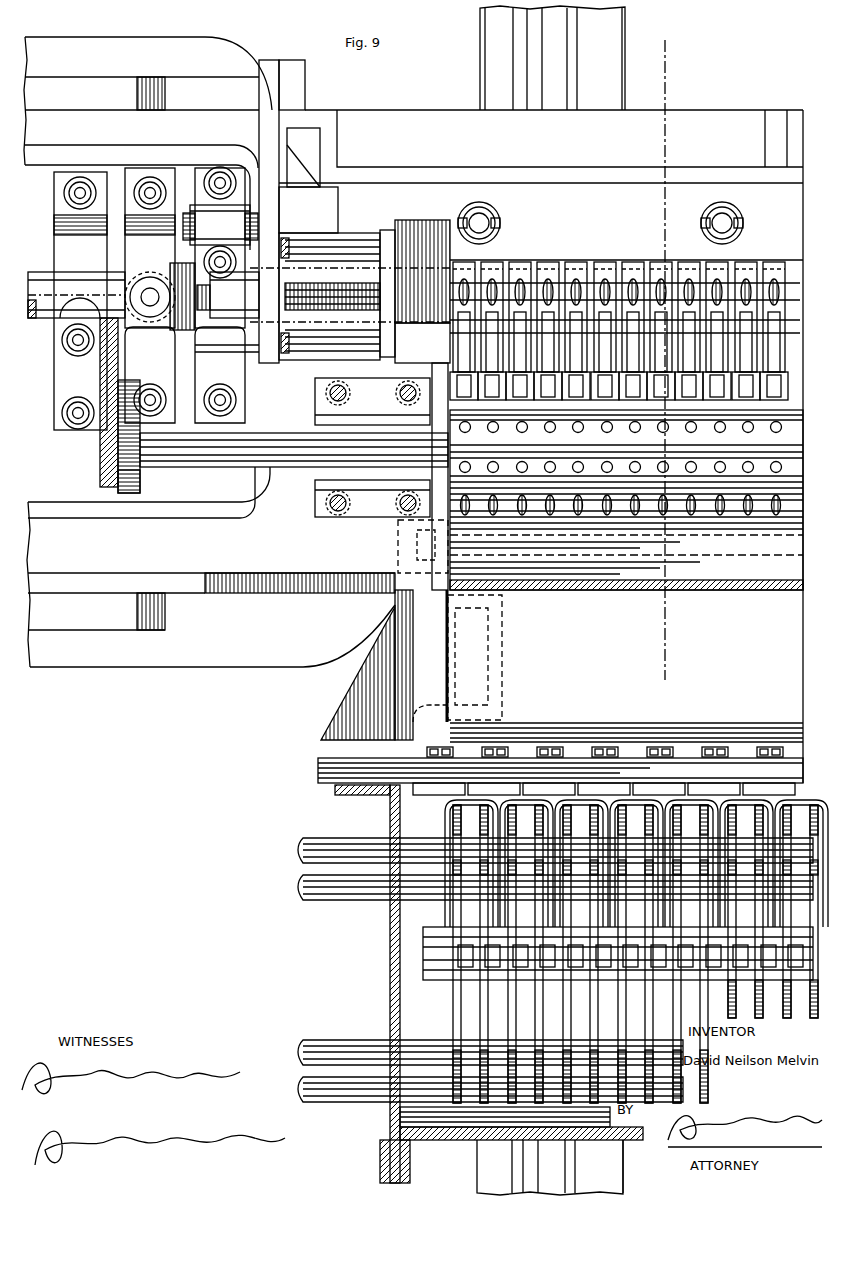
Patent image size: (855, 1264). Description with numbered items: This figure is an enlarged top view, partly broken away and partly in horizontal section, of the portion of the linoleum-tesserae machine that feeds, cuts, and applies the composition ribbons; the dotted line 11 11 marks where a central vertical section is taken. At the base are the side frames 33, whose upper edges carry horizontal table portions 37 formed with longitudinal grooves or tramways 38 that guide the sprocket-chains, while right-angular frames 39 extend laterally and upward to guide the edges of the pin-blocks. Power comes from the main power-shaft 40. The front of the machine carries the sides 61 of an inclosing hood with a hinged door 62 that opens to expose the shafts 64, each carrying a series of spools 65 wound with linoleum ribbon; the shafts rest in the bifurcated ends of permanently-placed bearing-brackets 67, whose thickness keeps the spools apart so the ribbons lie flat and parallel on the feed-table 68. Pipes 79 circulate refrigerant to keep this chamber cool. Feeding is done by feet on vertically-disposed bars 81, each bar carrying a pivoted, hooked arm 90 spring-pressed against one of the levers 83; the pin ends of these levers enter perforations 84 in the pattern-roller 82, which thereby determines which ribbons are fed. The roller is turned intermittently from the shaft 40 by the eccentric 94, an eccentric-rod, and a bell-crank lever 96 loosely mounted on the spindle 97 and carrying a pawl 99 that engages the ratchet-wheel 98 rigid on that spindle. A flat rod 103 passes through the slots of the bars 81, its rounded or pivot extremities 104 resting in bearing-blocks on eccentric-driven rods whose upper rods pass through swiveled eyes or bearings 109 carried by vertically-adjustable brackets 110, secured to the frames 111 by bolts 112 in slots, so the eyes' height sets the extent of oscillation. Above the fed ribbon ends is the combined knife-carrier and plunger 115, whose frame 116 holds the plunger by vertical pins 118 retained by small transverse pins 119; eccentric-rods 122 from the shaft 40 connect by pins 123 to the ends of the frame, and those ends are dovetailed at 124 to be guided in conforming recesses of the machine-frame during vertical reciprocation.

The dotted line 11 11 is at (663, 357).
The side frames 33 is at (634, 600).
The horizontal table portions 37 is at (585, 600).
The longitudinal grooves or tramways 38 is at (534, 600).
The right-angular frames 39 is at (477, 1170).
The main power-shaft 40 is at (69, 286).
The sides of inclosing frame 61 is at (390, 985).
The hinged door 62 is at (440, 1142).
The shafts 64 is at (425, 955).
The spools 65 is at (614, 963).
The bearing-brackets 67 is at (780, 800).
The feed-table 68 is at (625, 666).
The pipes 79 is at (555, 970).
The vertically-disposed bars 81 is at (500, 262).
The pattern-roller 82 is at (626, 500).
The levers 83 is at (792, 392).
The perforations 84 is at (626, 427).
The arm 90 is at (424, 330).
The eccentric 94 is at (80, 301).
The bell-crank lever 96 is at (105, 440).
The spindle 97 is at (220, 467).
The ratchet-wheel 98 is at (140, 487).
The pawl 99 is at (108, 470).
The flat rod 103 is at (214, 296).
The rounded or pivot extremities 104 is at (150, 375).
The swiveled eyes or bearings 109 is at (152, 272).
The vertically-adjustable brackets 110 is at (198, 330).
The frames 111 is at (335, 255).
The bolts 112 is at (288, 245).
The combined knife-carrier and plunger 115 is at (405, 183).
The frame 116 is at (541, 221).
The vertical pins 118 is at (466, 213).
The small transverse pins 119 is at (500, 224).
The eccentric-rods 122 is at (220, 247).
The pins 123 is at (291, 215).
The dovetailed ends 124 is at (303, 157).